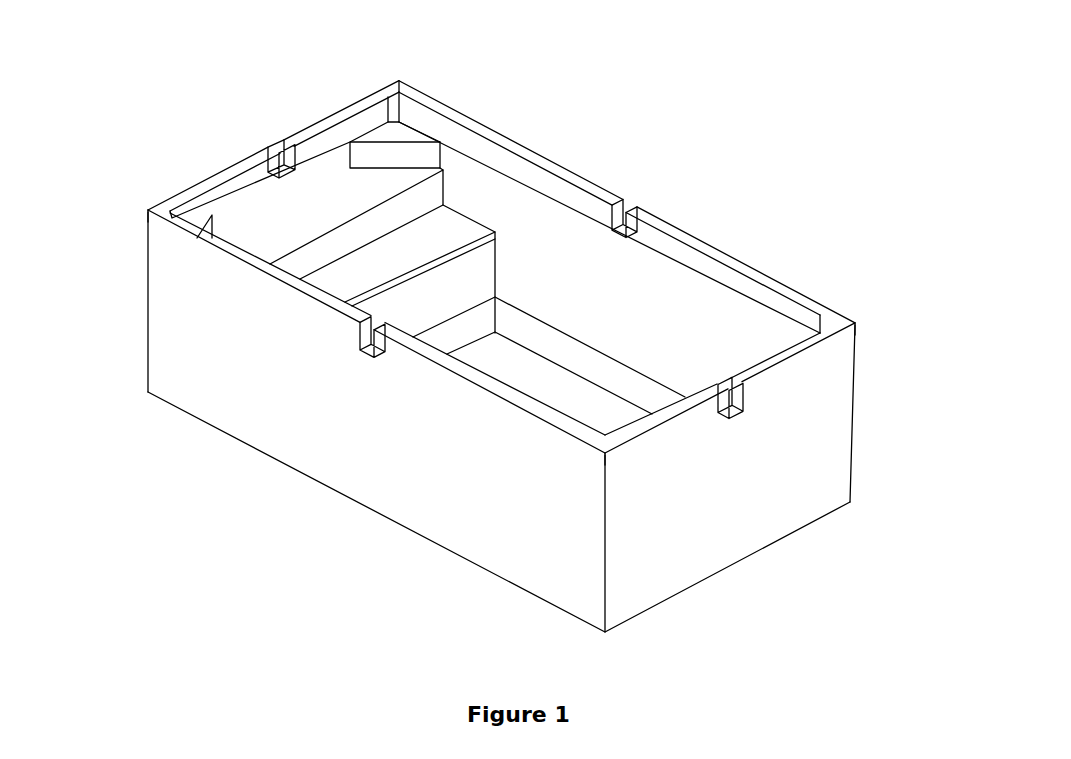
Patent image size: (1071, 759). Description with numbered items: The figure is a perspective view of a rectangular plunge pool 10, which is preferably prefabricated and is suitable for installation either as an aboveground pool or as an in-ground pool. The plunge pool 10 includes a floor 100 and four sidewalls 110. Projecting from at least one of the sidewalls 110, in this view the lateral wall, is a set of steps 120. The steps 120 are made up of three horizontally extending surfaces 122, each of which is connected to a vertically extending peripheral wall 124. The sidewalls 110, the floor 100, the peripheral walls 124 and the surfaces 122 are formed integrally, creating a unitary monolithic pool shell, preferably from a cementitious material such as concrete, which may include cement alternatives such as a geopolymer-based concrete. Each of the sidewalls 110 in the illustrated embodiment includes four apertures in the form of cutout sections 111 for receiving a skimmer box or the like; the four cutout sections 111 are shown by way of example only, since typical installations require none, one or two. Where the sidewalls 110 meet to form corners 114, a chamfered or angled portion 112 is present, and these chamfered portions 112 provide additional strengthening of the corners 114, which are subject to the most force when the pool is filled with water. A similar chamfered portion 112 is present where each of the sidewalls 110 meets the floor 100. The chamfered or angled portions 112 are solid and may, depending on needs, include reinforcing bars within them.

The rectangular plunge pool 10 is at (757, 75).
The floor 100 is at (517, 380).
The sidewalls 110 is at (358, 118).
The cutout sections 111 is at (269, 153).
The chamfered or angled portion 112 is at (397, 86).
The corners 114 is at (388, 76).
The set of steps 120 is at (276, 199).
The horizontally extending surfaces 122 is at (418, 230).
The vertically extending peripheral wall 124 is at (390, 310).